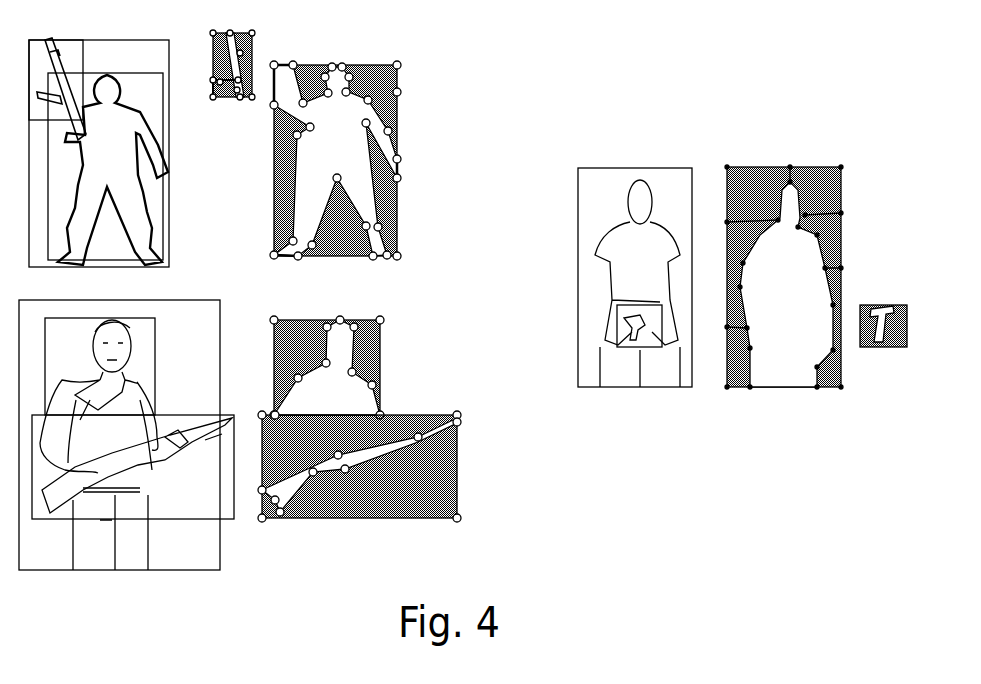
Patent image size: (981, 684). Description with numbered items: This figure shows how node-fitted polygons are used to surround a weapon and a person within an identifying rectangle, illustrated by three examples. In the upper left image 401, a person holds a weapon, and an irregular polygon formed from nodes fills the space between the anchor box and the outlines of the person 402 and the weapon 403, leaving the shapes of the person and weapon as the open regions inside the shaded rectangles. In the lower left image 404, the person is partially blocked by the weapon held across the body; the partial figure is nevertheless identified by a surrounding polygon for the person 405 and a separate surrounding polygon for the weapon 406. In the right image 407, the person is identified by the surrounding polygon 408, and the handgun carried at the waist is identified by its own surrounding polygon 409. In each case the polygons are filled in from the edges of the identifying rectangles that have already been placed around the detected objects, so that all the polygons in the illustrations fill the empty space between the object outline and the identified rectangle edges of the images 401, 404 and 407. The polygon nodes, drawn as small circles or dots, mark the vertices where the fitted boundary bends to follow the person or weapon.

The upper left image 401 is at (130, 115).
The person polygon 402 is at (340, 63).
The weapon polygon 403 is at (250, 100).
The lower left image 404 is at (137, 402).
The person polygon 405 is at (332, 323).
The weapon polygon 406 is at (397, 440).
The right image 407 is at (640, 198).
The person polygon 408 is at (785, 200).
The weapon polygon 409 is at (878, 311).